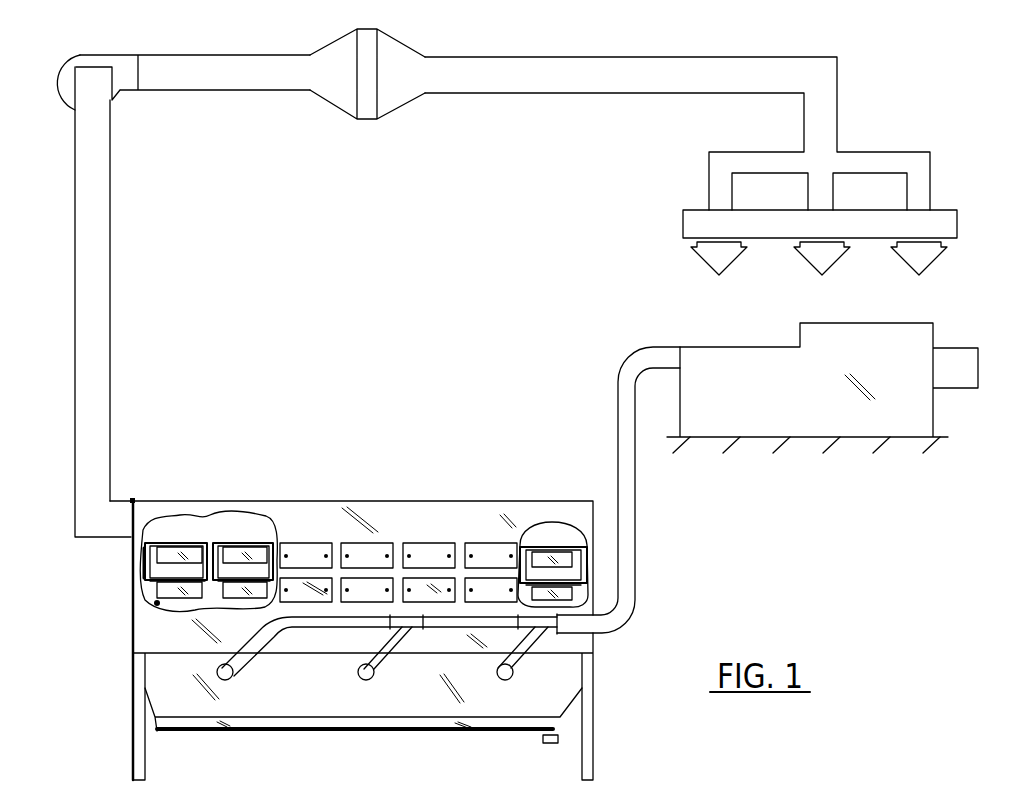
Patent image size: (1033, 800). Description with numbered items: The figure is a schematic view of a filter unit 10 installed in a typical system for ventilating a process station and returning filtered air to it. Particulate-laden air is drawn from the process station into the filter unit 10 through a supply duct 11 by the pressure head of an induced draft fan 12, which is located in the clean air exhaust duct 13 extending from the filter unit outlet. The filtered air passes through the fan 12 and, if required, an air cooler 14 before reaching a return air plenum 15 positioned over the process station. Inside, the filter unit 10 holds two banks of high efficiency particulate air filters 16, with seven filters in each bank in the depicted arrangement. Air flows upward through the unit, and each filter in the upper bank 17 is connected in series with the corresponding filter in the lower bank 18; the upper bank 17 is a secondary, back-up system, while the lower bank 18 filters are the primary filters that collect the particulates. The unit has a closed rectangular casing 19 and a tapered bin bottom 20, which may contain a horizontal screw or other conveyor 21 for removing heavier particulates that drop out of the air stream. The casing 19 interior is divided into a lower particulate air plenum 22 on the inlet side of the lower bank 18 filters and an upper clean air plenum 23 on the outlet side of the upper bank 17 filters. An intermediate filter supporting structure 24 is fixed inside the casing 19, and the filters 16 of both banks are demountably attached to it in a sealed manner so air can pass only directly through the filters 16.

The filter unit 10 is at (351, 601).
The supply duct 11 is at (638, 500).
The induced draft fan 12 is at (80, 57).
The clean air exhaust duct 13 is at (110, 423).
The air cooler 14 is at (403, 52).
The return air plenum 15 is at (683, 222).
The high efficiency particulate air filters 16 is at (380, 557).
The upper bank 17 is at (547, 543).
The lower bank 18 is at (157, 603).
The closed rectangular casing 19 is at (352, 503).
The tapered bin bottom 20 is at (309, 691).
The conveyor 21 is at (317, 723).
The lower particulate air plenum 22 is at (203, 600).
The upper clean air plenum 23 is at (227, 522).
The intermediate filter supporting structure 24 is at (203, 543).